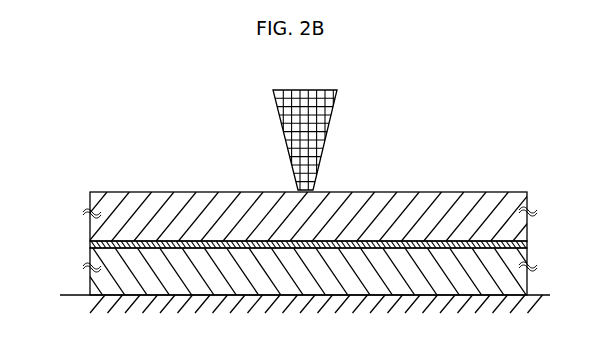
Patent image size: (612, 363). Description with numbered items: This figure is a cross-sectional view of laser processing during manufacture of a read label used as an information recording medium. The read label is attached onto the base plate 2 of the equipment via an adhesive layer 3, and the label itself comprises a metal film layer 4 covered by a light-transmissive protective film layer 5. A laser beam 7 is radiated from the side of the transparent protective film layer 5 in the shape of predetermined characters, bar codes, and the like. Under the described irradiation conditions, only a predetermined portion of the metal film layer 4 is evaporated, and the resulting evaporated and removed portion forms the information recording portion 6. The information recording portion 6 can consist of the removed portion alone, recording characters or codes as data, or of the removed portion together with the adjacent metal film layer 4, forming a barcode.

The base plate 2 is at (98, 312).
The adhesive layer 3 is at (120, 262).
The metal film layer 4 is at (92, 246).
The light-transmissive protective film layer 5 is at (117, 217).
The information recording portion 6 is at (310, 243).
The laser beam 7 is at (286, 119).